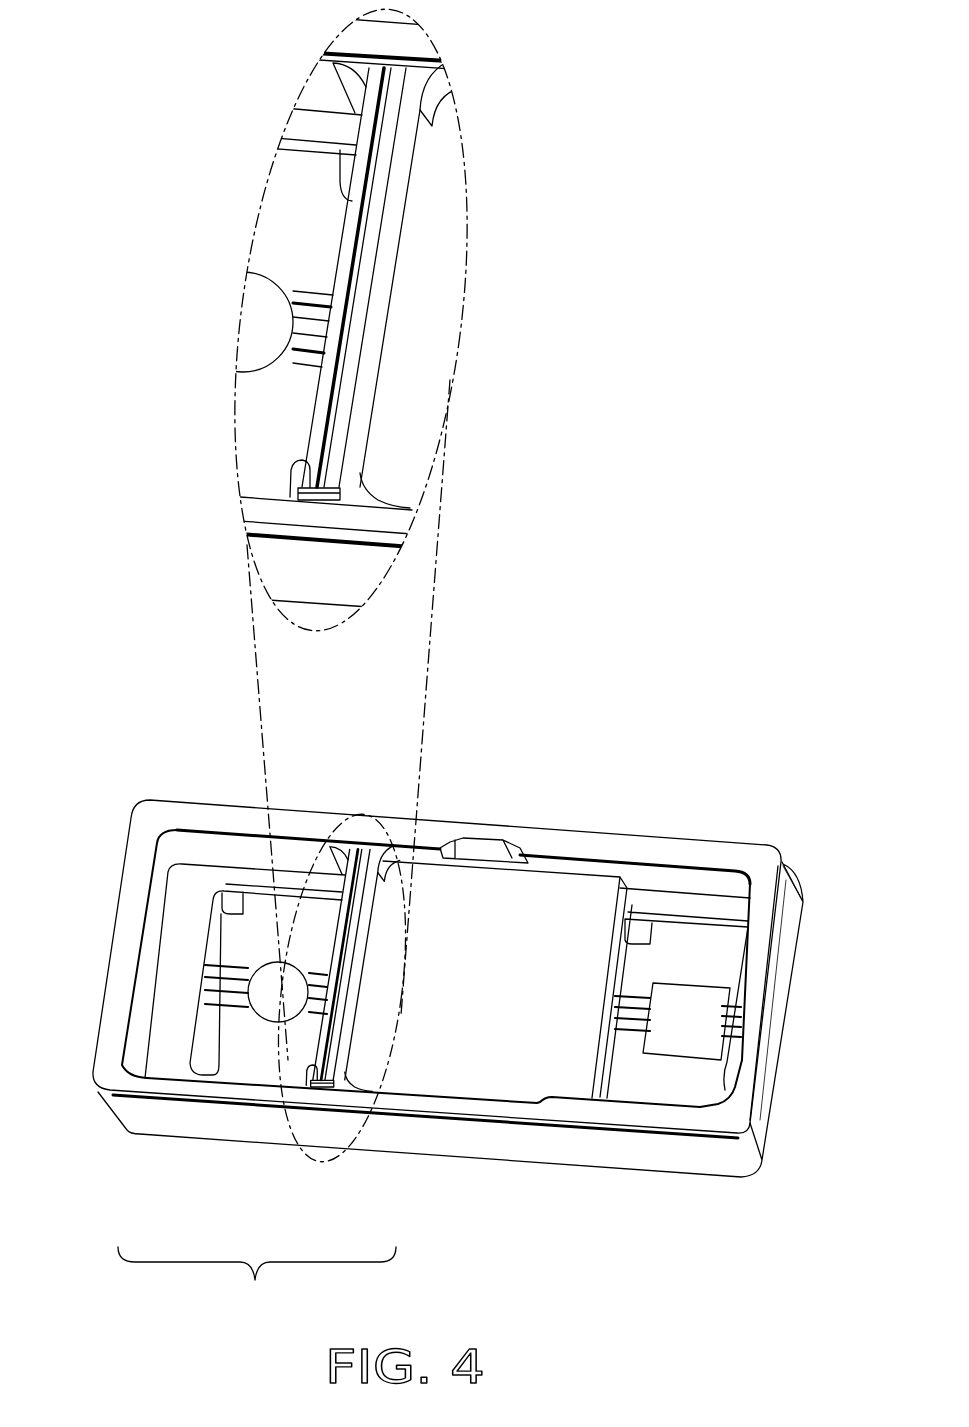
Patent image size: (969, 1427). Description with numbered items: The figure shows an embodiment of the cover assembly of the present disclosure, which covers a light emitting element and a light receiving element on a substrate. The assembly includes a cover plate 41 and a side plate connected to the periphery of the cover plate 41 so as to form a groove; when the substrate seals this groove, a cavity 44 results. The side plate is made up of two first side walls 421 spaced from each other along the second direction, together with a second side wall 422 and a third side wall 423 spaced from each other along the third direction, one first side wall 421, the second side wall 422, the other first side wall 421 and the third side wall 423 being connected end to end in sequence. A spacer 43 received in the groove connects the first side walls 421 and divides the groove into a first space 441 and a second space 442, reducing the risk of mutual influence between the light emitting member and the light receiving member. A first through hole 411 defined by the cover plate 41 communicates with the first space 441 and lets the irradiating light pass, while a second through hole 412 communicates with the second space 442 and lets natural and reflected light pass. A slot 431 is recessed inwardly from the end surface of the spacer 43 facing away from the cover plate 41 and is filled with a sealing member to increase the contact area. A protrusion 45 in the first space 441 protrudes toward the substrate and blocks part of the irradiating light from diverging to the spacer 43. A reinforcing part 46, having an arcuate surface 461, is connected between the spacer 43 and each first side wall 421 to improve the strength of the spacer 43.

The cover plate 41 is at (190, 913).
The first side walls 421 is at (663, 1120).
The second side wall 422 is at (147, 953).
The third side wall 423 is at (777, 1003).
The cavity 44 is at (257, 1284).
The first space 441 is at (263, 422).
The second space 442 is at (168, 1060).
The second through hole 412 is at (263, 310).
The first through hole 411 is at (693, 1032).
The spacer 43 is at (352, 227).
The slot 431 is at (325, 475).
The protrusion 45 is at (417, 405).
The reinforcing part 46 is at (373, 72).
The arcuate surface 461 is at (420, 97).